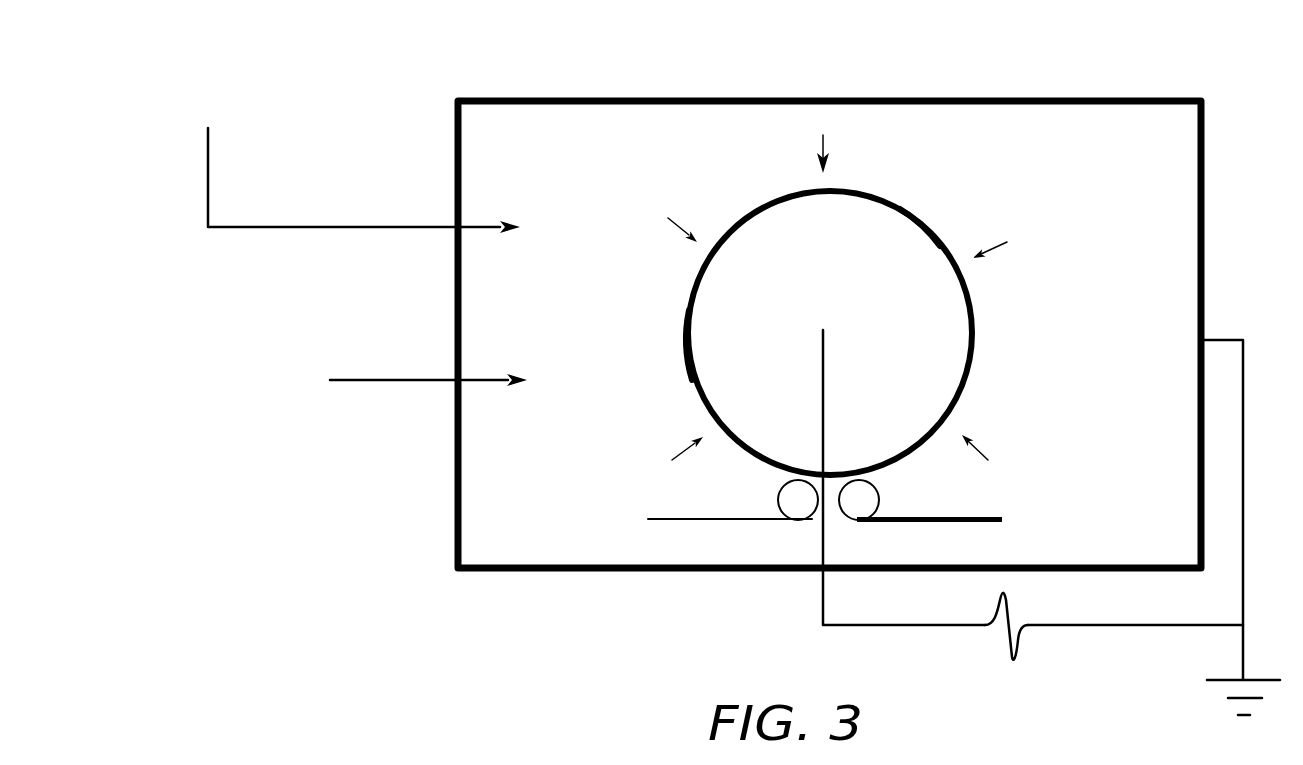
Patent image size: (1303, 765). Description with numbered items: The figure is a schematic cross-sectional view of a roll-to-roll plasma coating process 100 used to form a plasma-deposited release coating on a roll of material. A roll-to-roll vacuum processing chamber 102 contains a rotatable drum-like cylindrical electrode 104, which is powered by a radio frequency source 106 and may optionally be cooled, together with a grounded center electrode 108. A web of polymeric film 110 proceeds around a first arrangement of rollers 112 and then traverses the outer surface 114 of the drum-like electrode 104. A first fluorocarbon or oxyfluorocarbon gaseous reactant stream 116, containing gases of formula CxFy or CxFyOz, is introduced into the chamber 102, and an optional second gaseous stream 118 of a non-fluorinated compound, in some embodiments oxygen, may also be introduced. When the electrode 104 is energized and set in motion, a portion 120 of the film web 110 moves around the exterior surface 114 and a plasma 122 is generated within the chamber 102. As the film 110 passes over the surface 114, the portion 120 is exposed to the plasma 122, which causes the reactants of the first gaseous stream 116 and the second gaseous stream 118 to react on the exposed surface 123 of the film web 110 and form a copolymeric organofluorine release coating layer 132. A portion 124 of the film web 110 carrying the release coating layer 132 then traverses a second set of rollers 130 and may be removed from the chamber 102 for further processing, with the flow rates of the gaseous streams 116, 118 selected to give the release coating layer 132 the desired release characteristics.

The process 100 is at (396, 37).
The roll-to-roll vacuum processing chamber 102 is at (956, 78).
The rotatable drum-like cylindrical electrode 104 is at (972, 349).
The radio frequency (RF) source 106 is at (1002, 630).
The grounded center electrode 108 is at (822, 603).
The web of polymeric film 110 is at (672, 519).
The first arrangement of rollers 112 is at (786, 498).
The outer surface 114 is at (687, 358).
The first fluorocarbon or oxyfluorocarbon gaseous reactant stream 116 is at (290, 227).
The second gaseous stream 118 is at (362, 380).
The portion of the film web 120 is at (660, 299).
The plasma 122 is at (795, 146).
The exposed surface 123 is at (920, 226).
The portion of the film web including the release coating layer 124 is at (920, 473).
The second set of rollers 130 is at (858, 505).
The release coating layer 132 is at (900, 523).